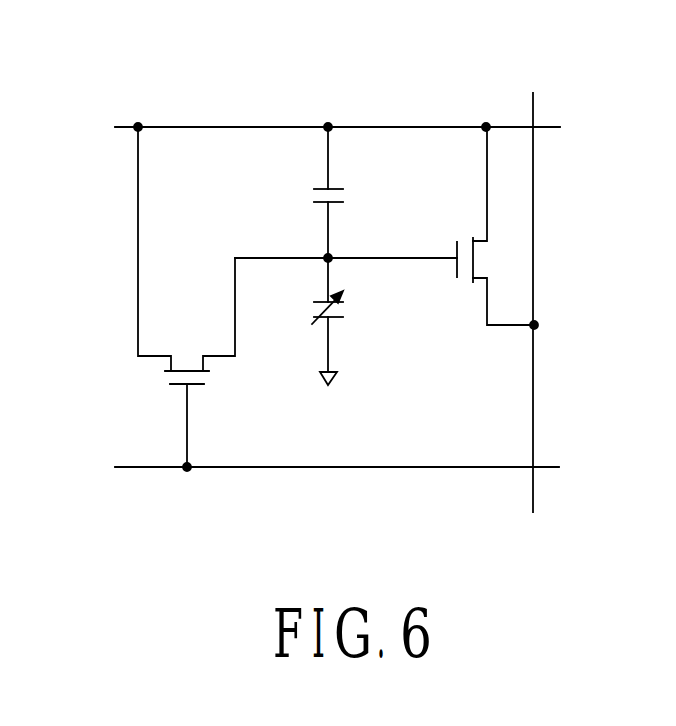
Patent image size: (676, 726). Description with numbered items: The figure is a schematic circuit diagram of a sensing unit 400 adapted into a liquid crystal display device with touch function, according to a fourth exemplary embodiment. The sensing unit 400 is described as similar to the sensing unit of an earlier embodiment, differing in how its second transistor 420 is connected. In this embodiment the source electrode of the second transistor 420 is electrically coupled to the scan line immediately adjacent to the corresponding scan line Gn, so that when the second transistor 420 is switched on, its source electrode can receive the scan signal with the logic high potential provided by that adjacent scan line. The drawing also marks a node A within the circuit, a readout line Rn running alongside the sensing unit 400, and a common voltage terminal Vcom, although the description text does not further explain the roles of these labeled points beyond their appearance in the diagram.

The sensing unit 400 is at (358, 33).
The second transistor 420 is at (474, 256).
The corresponding scan line Gn is at (319, 469).
The readout line n Rn is at (532, 319).
The node A is at (346, 245).
The common voltage Vcom is at (350, 361).